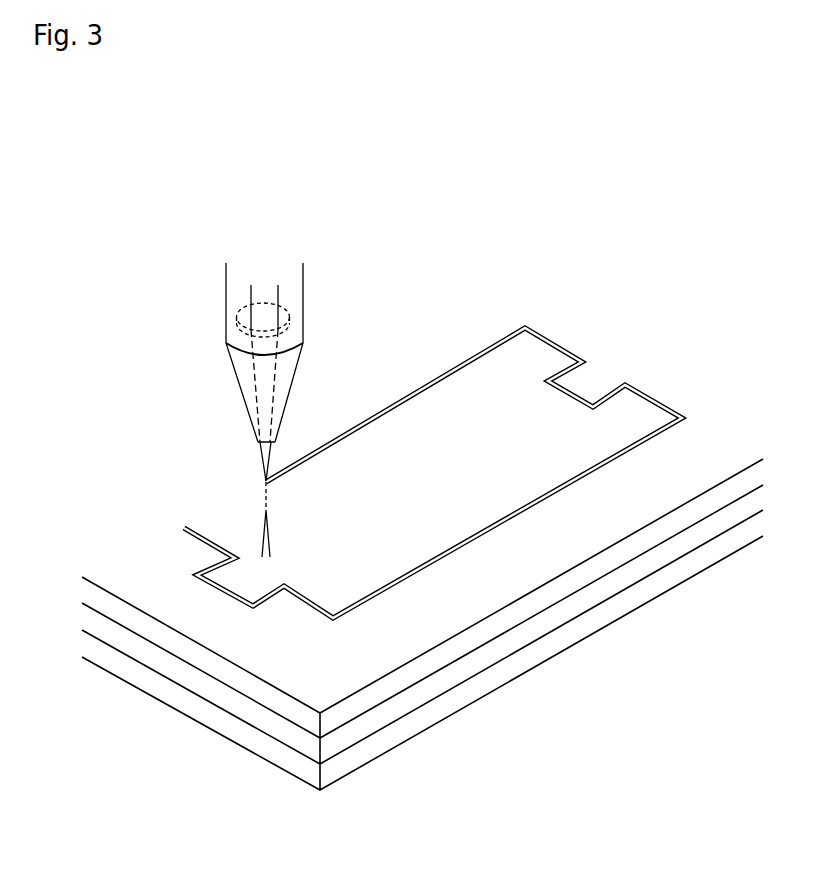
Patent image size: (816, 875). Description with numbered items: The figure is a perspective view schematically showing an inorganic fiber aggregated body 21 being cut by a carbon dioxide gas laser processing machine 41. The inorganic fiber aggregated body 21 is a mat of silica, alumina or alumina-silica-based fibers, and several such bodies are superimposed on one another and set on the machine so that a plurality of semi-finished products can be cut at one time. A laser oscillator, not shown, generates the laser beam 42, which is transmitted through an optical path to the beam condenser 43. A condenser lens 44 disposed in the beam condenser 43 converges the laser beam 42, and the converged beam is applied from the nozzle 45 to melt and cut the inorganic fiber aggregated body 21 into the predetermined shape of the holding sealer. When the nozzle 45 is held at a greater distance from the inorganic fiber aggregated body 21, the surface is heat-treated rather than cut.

The carbon dioxide gas laser processing machine 41 is at (276, 348).
The laser beam 42 is at (250, 299).
The beam condenser 43 is at (303, 309).
The condenser lens 44 is at (287, 333).
The nozzle 45 is at (260, 450).
The inorganic fiber aggregated body 21 is at (637, 545).